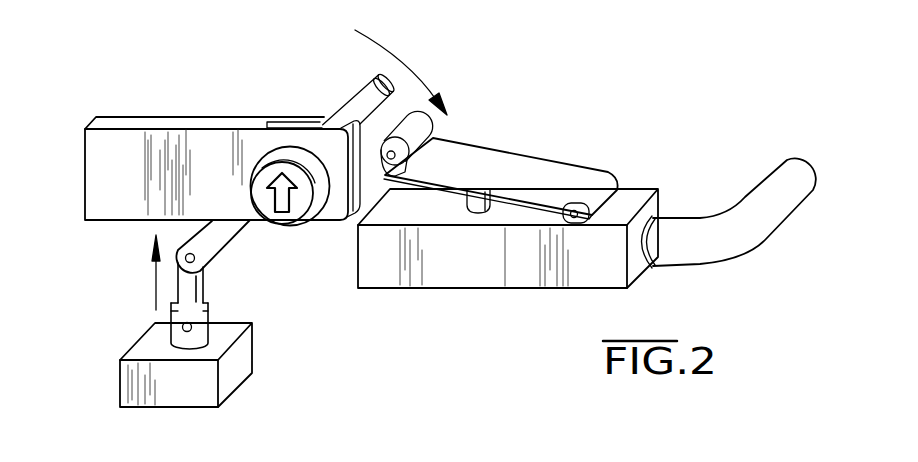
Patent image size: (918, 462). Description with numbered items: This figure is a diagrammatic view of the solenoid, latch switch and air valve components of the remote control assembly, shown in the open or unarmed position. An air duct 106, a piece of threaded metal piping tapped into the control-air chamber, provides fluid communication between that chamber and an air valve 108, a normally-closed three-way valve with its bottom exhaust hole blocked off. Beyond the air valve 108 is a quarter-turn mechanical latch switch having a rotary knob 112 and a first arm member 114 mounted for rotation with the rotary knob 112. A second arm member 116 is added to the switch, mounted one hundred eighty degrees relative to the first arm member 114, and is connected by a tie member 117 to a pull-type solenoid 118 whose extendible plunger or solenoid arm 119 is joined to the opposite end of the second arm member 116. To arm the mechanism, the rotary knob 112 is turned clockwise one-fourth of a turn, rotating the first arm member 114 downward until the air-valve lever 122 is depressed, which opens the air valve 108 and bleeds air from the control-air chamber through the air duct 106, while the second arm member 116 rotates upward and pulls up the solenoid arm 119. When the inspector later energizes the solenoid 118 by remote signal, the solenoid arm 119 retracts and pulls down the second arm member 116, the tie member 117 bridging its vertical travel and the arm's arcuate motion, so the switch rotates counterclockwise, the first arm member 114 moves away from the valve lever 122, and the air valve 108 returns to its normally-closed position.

The air duct 106 is at (750, 197).
The air valve 108 is at (442, 272).
The rotary knob 112 is at (290, 157).
The first arm member 114 is at (357, 112).
The second arm member 116 is at (222, 238).
The tie member 117 is at (195, 283).
The pull-type solenoid 118 is at (152, 347).
The solenoid arm 119 is at (177, 328).
The air-valve lever 122 is at (485, 155).